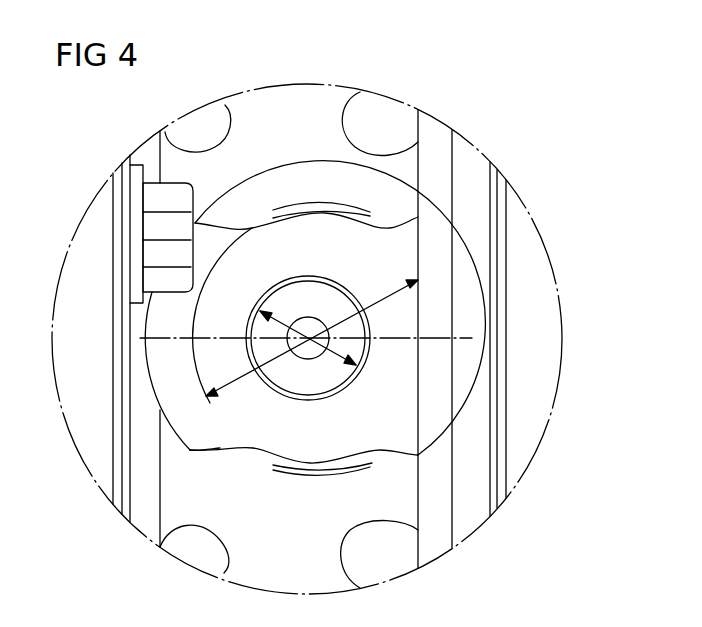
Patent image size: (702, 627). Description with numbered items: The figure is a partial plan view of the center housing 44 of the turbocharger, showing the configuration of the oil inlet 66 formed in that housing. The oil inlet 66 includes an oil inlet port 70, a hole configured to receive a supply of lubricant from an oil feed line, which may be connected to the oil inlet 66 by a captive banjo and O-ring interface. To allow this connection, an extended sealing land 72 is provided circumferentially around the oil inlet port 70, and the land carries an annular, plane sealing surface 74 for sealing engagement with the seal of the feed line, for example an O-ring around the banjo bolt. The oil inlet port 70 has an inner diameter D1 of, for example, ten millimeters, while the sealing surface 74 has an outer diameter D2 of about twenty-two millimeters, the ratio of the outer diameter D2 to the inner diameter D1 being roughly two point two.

The center housing 44 is at (470, 520).
The oil inlet 66 is at (433, 322).
The oil inlet port 70 is at (343, 370).
The extended sealing land 72 is at (192, 443).
The annular sealing surface 74 is at (214, 318).
The inner diameter D1 is at (286, 316).
The outer diameter D2 is at (386, 295).